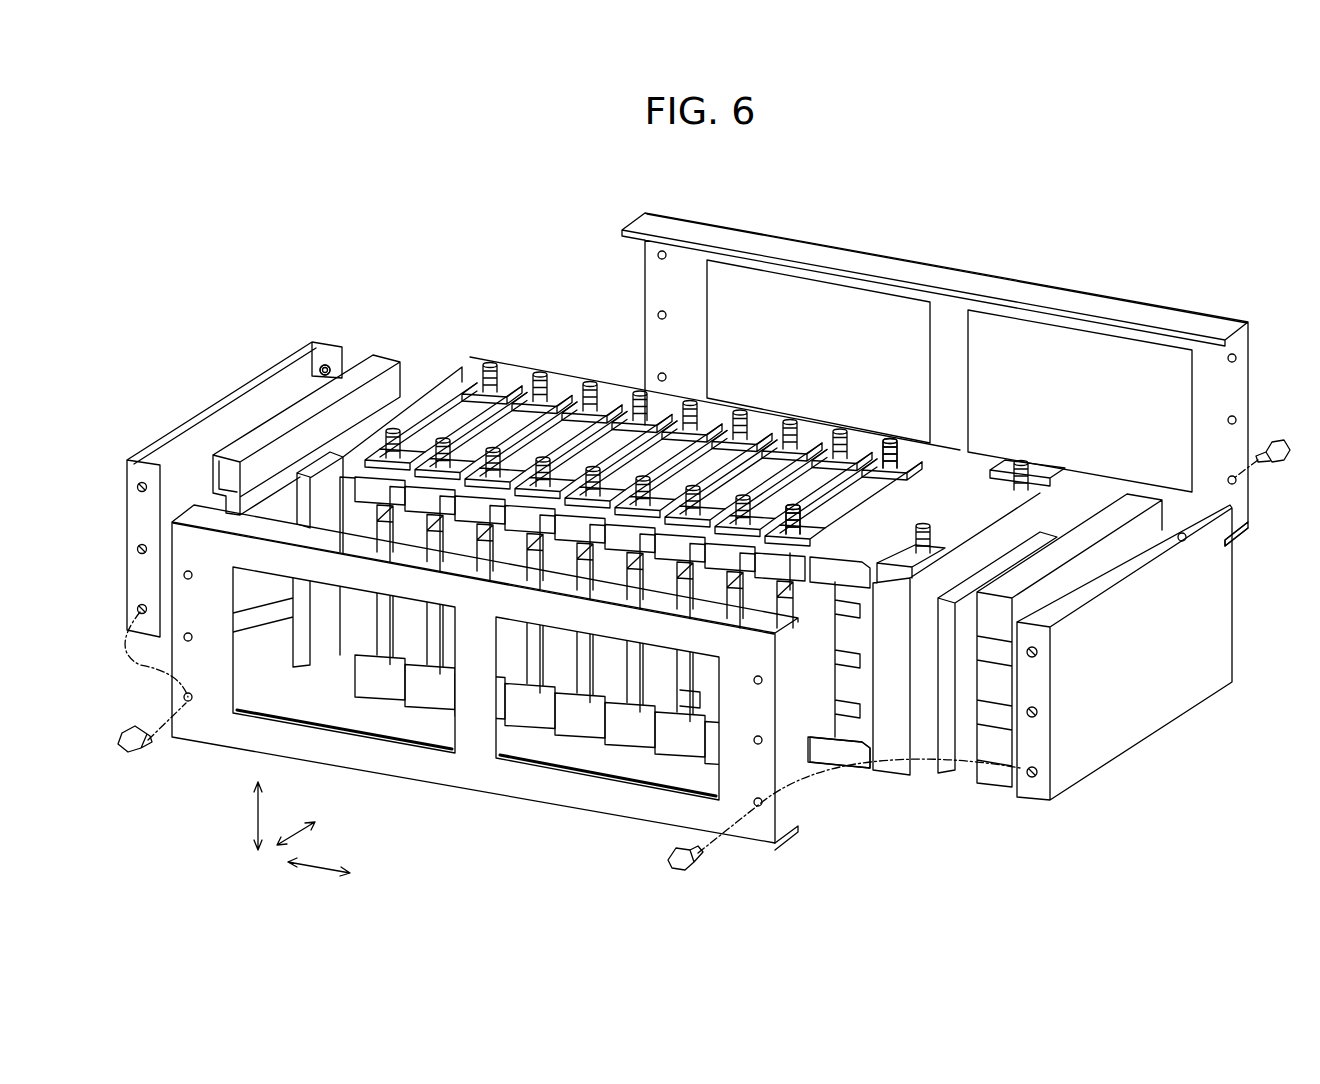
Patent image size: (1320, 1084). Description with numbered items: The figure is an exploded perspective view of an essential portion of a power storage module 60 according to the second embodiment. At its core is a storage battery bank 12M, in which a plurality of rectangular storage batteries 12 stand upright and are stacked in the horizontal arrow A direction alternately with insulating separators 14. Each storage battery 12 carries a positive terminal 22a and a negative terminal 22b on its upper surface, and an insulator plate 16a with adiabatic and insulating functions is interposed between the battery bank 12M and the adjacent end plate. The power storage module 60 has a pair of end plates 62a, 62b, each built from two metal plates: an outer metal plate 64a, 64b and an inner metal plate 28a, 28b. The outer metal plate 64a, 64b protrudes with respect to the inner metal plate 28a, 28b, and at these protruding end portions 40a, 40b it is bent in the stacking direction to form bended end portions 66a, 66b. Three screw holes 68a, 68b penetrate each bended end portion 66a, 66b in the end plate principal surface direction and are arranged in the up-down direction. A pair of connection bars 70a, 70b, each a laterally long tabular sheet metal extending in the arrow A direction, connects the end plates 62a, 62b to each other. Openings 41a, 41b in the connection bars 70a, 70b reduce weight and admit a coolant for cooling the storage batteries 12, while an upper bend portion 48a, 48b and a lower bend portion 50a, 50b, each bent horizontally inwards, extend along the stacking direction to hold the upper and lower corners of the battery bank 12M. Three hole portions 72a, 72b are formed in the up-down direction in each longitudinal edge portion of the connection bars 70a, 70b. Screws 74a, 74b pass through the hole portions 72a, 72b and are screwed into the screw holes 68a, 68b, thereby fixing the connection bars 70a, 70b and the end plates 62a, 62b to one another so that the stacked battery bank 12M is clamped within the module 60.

The power storage module 60 is at (446, 203).
The storage battery 12 is at (636, 618).
The storage battery bank 12M is at (889, 784).
The separator 14 is at (684, 727).
The insulator plate 16a is at (949, 785).
The positive terminal 22a is at (887, 442).
The negative terminal 22b is at (806, 506).
The inner metal plate 28a is at (1137, 479).
The inner metal plate 28b is at (389, 340).
The protruding end portion 40a is at (1117, 684).
The protruding end portion 40b is at (219, 470).
The opening 41a is at (497, 709).
The opening 41b is at (972, 341).
The upper bend portion 48a is at (484, 566).
The upper bend portion 48b is at (693, 235).
The lower bend portion 50a is at (792, 836).
The lower bend portion 50b is at (1240, 524).
The end plate 62a is at (1085, 589).
The end plate 62b is at (308, 374).
The outer metal plate 64a is at (1184, 523).
The outer metal plate 64b is at (331, 323).
The bended end portion 66a is at (1024, 792).
The bended end portion 66b is at (135, 484).
The screw hole 68a is at (1033, 778).
The screw hole 68b is at (320, 372).
The connection bar 70a is at (495, 693).
The connection bar 70b is at (946, 376).
The hole portion 72a is at (188, 703).
The hole portion 72b is at (667, 319).
The screw 74a is at (127, 755).
The screw 74b is at (1283, 436).